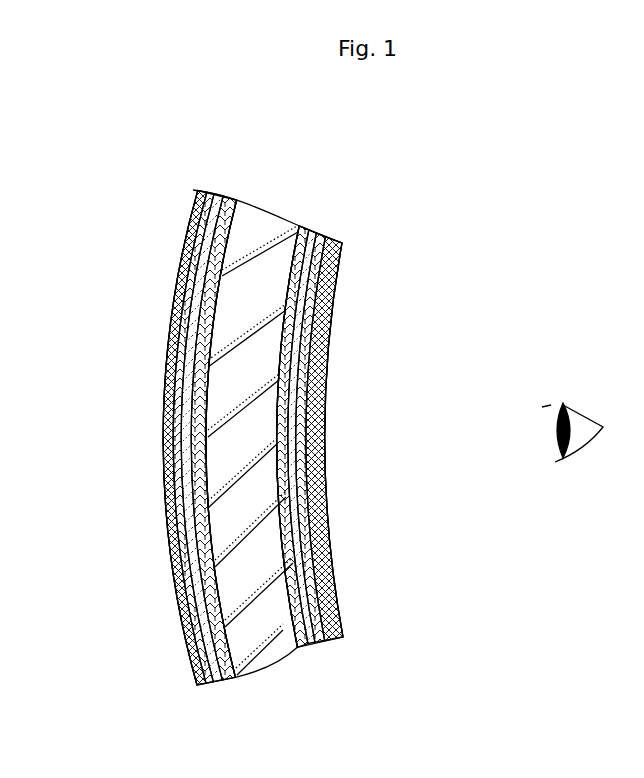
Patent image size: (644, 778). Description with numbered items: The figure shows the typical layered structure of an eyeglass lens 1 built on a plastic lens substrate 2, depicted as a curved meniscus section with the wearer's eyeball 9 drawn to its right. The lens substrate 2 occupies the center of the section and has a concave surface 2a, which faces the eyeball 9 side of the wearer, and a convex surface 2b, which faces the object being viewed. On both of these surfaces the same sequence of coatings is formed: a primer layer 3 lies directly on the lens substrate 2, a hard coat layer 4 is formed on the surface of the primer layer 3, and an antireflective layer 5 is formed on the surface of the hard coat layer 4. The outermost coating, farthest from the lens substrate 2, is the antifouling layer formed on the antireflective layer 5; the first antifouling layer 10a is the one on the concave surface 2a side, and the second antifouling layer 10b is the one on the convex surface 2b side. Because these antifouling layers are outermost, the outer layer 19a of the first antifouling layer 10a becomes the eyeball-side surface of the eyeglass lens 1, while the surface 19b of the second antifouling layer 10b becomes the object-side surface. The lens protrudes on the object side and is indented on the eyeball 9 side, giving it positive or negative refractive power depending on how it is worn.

The eyeglass lens 1 is at (327, 163).
The lens substrate 2 is at (256, 220).
The concave surface 2a is at (320, 266).
The convex surface 2b is at (195, 222).
The primer layer 3 is at (232, 683).
The hard coat layer 4 is at (221, 686).
The antireflective layer 5 is at (209, 688).
The eyeball 9 is at (560, 402).
The first antifouling layer 10a is at (342, 633).
The second antifouling layer 10b is at (200, 686).
The outer layer of the antifouling layer 19a is at (326, 462).
The surface of antifouling layer 19b is at (162, 472).